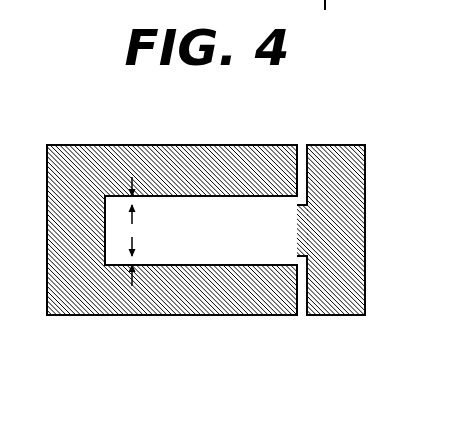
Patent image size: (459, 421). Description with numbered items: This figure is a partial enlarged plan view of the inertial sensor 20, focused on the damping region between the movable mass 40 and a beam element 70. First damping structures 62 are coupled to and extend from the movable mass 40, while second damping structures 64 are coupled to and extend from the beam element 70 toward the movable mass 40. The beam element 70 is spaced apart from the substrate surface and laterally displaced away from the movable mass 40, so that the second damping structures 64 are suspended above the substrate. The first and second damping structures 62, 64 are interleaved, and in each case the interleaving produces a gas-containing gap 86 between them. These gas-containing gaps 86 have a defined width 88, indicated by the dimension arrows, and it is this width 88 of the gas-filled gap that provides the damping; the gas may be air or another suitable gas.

The inertial sensor 20 is at (204, 233).
The movable mass 40 is at (186, 229).
The first damping structures 62 is at (155, 157).
The second damping structures 64 is at (224, 232).
The beam element 70 is at (224, 254).
The gas-containing gap 86 is at (230, 196).
The width 88 is at (130, 178).